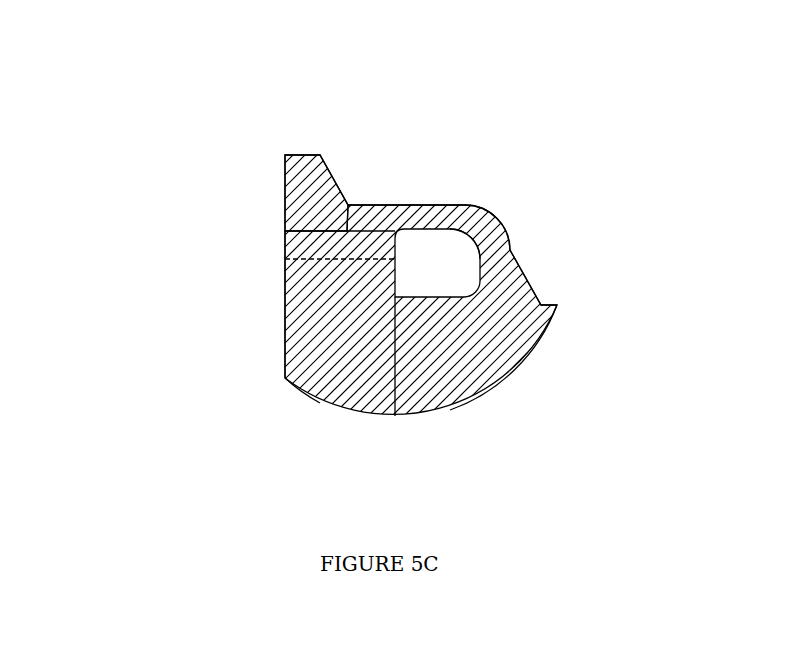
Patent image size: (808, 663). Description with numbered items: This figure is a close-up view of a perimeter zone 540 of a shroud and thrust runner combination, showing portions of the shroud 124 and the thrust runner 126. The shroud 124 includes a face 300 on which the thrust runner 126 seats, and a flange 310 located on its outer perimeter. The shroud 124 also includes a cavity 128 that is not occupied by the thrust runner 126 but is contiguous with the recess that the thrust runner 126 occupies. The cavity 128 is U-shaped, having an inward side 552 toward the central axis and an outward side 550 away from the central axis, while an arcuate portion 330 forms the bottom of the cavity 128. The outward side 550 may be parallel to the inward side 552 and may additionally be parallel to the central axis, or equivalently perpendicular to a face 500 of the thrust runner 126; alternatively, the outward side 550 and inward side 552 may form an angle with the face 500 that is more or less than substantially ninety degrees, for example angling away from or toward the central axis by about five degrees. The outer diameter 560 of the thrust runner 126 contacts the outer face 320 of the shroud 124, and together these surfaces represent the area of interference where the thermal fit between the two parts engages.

The perimeter zone 540 is at (632, 117).
The flange 310 is at (300, 182).
The outer face 320 is at (348, 207).
The outward side 550 is at (415, 204).
The outer diameter 560 is at (325, 232).
The face 500 is at (285, 320).
The thrust runner 126 is at (353, 362).
The cavity 128 is at (454, 273).
The arcuate portion 330 is at (483, 252).
The shroud 124 is at (522, 337).
The face 300 is at (397, 372).
The inward side 552 is at (423, 298).